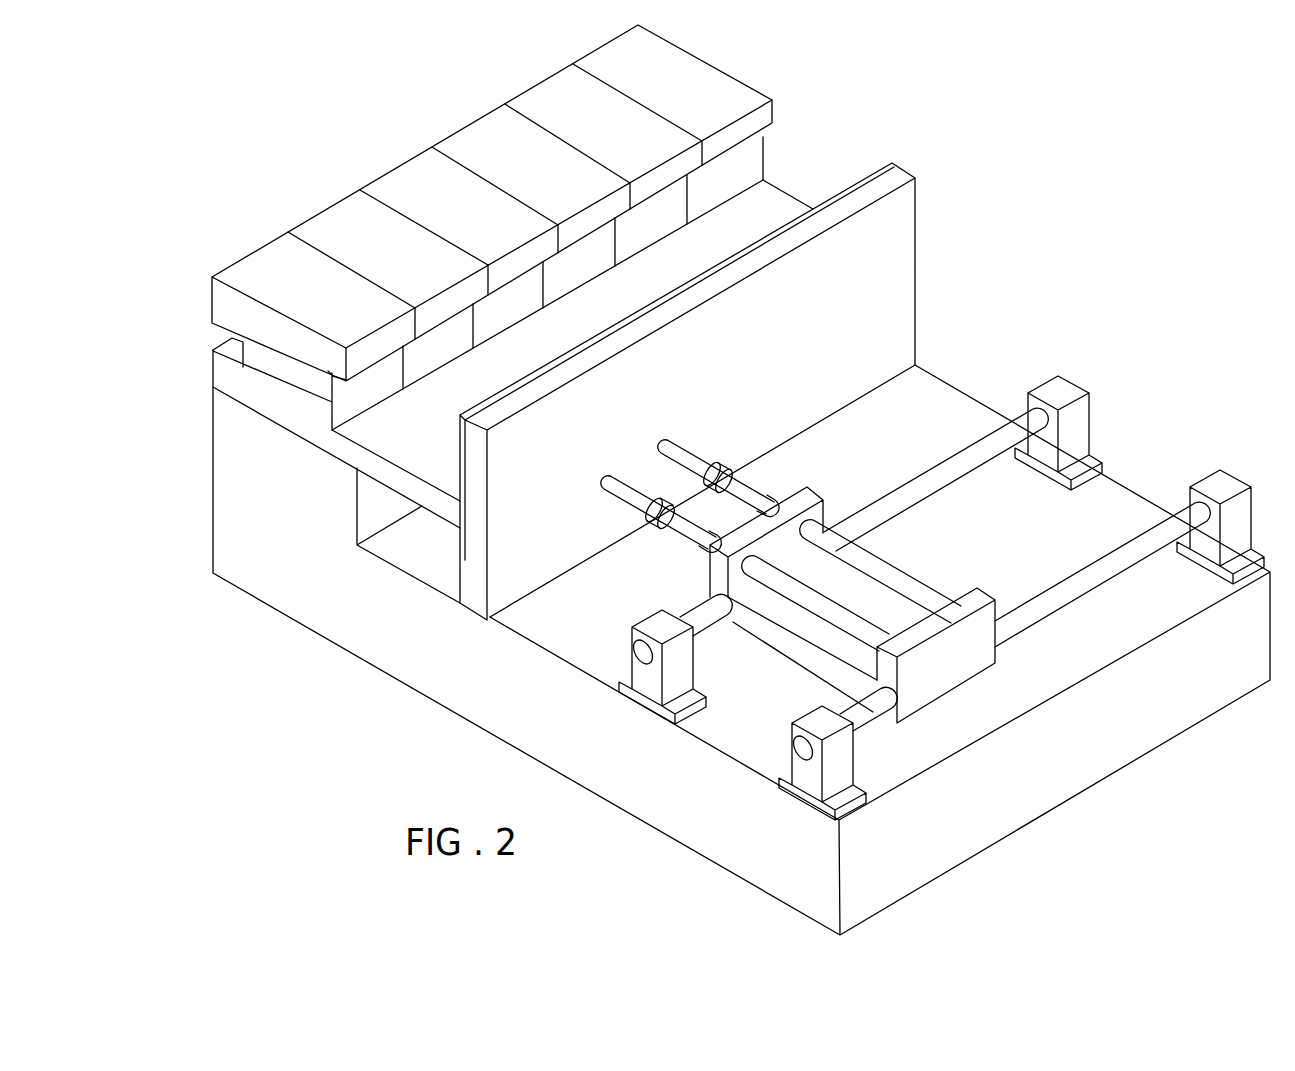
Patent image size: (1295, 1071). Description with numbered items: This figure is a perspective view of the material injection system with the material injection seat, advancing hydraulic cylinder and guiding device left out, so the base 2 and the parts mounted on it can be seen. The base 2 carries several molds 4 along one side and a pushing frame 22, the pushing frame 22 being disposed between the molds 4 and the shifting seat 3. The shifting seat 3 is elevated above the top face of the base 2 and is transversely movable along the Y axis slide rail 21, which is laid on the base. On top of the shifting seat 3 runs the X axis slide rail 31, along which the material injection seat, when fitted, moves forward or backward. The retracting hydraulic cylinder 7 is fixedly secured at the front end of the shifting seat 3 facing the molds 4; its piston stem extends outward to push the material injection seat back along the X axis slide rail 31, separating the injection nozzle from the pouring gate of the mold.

The base 2 is at (303, 612).
The pushing frame 22 is at (905, 245).
The molds 4 is at (275, 262).
The Y axis slide rail 21 is at (1028, 612).
The retracting hydraulic cylinder 7 is at (680, 528).
The X axis slide rail 31 is at (902, 580).
The shifting seat 3 is at (968, 663).